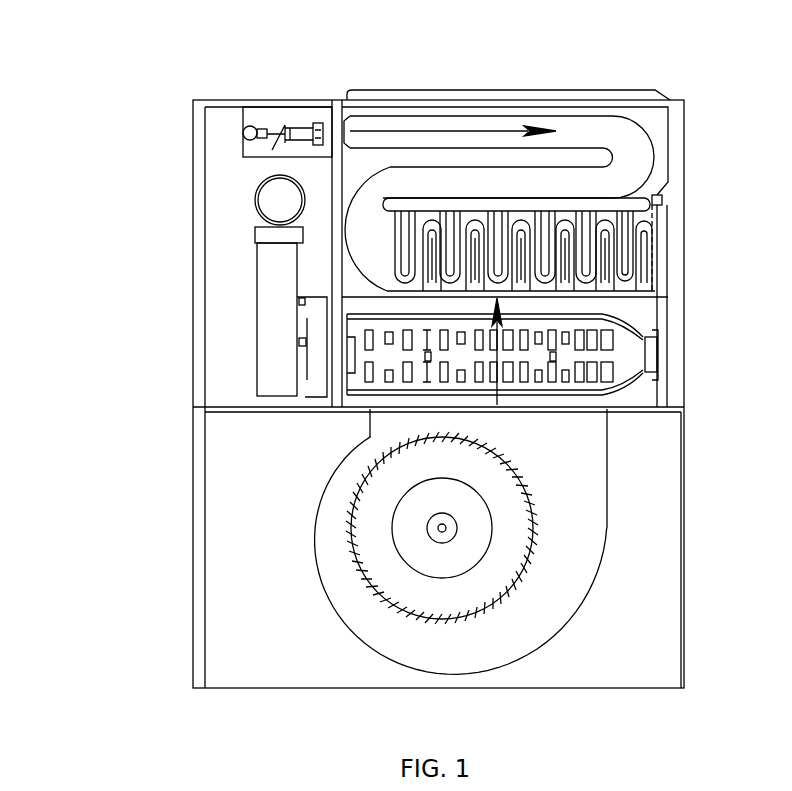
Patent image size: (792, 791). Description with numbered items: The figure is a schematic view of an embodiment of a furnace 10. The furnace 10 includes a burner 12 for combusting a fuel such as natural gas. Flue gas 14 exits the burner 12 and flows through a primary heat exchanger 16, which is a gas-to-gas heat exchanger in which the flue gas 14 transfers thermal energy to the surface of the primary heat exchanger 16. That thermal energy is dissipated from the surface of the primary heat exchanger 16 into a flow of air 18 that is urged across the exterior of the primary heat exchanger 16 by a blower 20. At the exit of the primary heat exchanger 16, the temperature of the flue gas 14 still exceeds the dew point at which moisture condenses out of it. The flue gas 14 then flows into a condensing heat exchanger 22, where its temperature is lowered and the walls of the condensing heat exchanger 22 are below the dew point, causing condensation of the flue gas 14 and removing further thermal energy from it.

The furnace 10 is at (120, 230).
The burner 12 is at (285, 127).
The flue gas 14 is at (475, 128).
The primary heat exchanger 16 is at (578, 130).
The flow of air 18 is at (500, 341).
The blower 20 is at (588, 518).
The condensing heat exchanger 22 is at (623, 367).